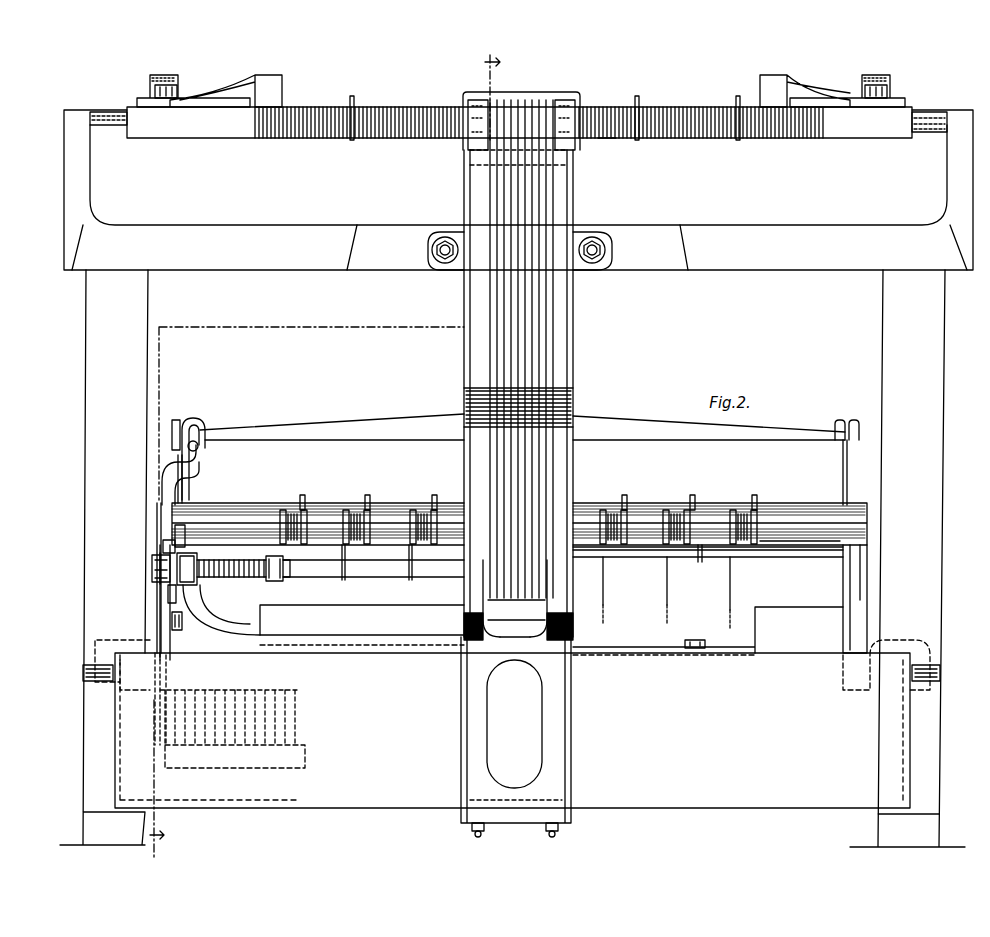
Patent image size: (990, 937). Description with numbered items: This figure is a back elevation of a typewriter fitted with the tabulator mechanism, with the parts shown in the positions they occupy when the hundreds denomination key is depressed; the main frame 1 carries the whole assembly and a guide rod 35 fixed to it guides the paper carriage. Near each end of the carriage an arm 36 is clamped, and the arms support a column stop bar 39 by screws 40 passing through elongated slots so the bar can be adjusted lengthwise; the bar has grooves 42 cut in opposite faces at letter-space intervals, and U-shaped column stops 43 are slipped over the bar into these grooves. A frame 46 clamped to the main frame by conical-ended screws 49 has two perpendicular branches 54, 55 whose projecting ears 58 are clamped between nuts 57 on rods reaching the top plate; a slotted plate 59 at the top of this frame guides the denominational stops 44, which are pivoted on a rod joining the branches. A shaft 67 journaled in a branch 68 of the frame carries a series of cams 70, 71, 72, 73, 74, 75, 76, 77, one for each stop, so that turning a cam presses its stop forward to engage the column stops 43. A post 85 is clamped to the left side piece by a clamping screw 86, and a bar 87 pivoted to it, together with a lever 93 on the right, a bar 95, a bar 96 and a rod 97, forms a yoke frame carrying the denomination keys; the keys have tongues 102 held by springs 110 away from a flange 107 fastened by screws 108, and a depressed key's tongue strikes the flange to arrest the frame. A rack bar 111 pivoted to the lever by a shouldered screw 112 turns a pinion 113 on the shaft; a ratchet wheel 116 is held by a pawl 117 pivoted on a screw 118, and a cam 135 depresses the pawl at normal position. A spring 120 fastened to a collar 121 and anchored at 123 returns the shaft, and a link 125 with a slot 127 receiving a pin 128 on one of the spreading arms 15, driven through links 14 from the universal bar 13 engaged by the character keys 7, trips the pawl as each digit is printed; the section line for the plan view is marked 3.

The main frame 1 is at (904, 746).
The section line 3 is at (325, 455).
The character keys 7 is at (262, 690).
The universal bar 13 is at (290, 768).
The links 14 is at (847, 455).
The spreading arms 15 is at (374, 442).
The guide rod 35 is at (918, 112).
The arms 36 is at (170, 80).
The column stop bar 39 is at (683, 138).
The screws 40 is at (178, 93).
The grooves 42 is at (608, 138).
The column stops 43 is at (355, 103).
The denominational stops 44 is at (550, 206).
The frame 46 is at (461, 686).
The screws 49 is at (479, 837).
The perpendicular branch 54 is at (464, 345).
The perpendicular branch 55 is at (573, 336).
The nuts 57 is at (450, 262).
The ears 58 is at (430, 248).
The plate 59 is at (532, 92).
The shaft 67 is at (381, 578).
The branch 68 is at (216, 620).
The cam 70 is at (546, 622).
The cam 71 is at (560, 642).
The cam 72 is at (530, 600).
The cam 73 is at (529, 634).
The cam 74 is at (516, 643).
The cam 75 is at (504, 641).
The cam 76 is at (489, 632).
The cam 77 is at (464, 620).
The post 85 is at (152, 630).
The clamping screw 86 is at (85, 680).
The bar 87 is at (867, 585).
The lever 93 is at (157, 521).
The bar 95 is at (700, 556).
The bar 96 is at (250, 503).
The rod 97 is at (800, 545).
The tongues 102 is at (344, 582).
The flange 107 is at (756, 622).
The screws 108 is at (693, 650).
The springs 110 is at (358, 510).
The rack bar 111 is at (171, 640).
The shouldered screw 112 is at (156, 726).
The pinion 113 is at (163, 547).
The ratchet wheel 116 is at (184, 530).
The pawl 117 is at (168, 596).
The screw 118 is at (183, 621).
The spring 120 is at (262, 582).
The collar 121 is at (288, 580).
The spring anchorage 123 is at (198, 580).
The link 125 is at (165, 484).
The slot 127 is at (204, 426).
The pin 128 is at (199, 448).
The cam 135 is at (152, 567).